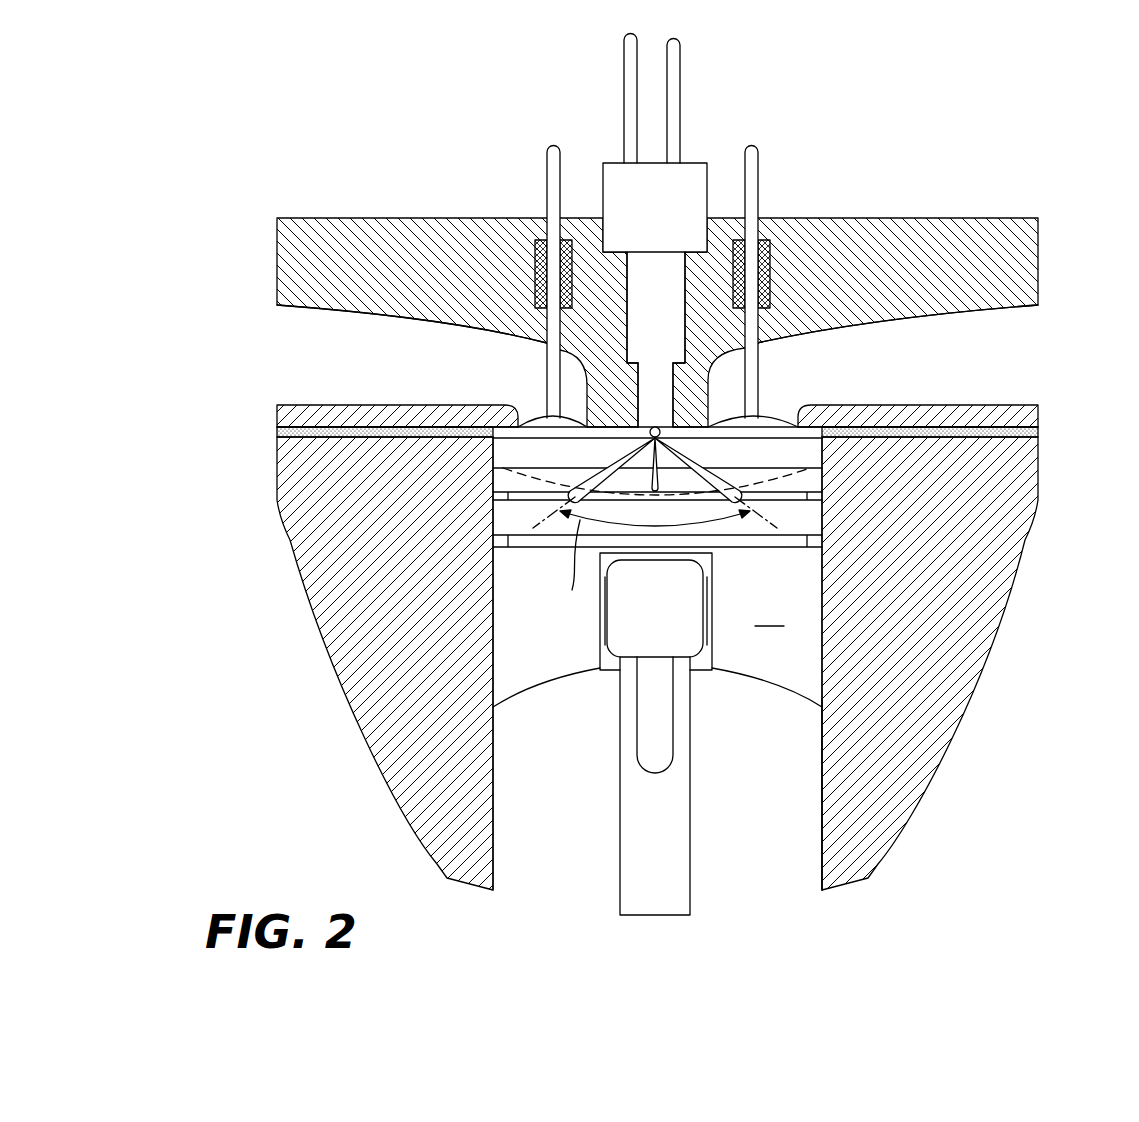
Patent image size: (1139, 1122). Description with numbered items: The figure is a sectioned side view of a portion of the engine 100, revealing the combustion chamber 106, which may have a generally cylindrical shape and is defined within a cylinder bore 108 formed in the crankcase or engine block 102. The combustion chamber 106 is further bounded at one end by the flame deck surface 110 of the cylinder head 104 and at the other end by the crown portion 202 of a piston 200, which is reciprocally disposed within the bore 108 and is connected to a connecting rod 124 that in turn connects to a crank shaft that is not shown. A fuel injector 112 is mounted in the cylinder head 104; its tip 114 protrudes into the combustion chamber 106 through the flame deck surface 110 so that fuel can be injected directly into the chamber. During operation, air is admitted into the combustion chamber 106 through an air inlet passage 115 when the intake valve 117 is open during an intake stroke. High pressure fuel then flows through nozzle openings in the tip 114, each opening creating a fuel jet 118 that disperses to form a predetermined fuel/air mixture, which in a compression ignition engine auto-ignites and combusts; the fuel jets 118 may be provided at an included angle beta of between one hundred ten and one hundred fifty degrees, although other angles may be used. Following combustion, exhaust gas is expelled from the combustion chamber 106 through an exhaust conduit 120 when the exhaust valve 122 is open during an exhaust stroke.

The engine 100 is at (1012, 178).
The engine block 102 is at (970, 635).
The cylinder head 104 is at (1023, 260).
The combustion chamber 106 is at (500, 458).
The cylinder bore 108 is at (822, 848).
The flame deck surface 110 is at (813, 427).
The fuel injector 112 is at (693, 172).
The tip 114 is at (650, 430).
The air inlet passage 115 is at (300, 364).
The intake valve 117 is at (548, 420).
The fuel jet 118 is at (797, 478).
The exhaust conduit 120 is at (1022, 345).
The exhaust valve 122 is at (753, 423).
The connecting rod 124 is at (668, 812).
The piston 200 is at (657, 572).
The crown portion 202 is at (500, 480).